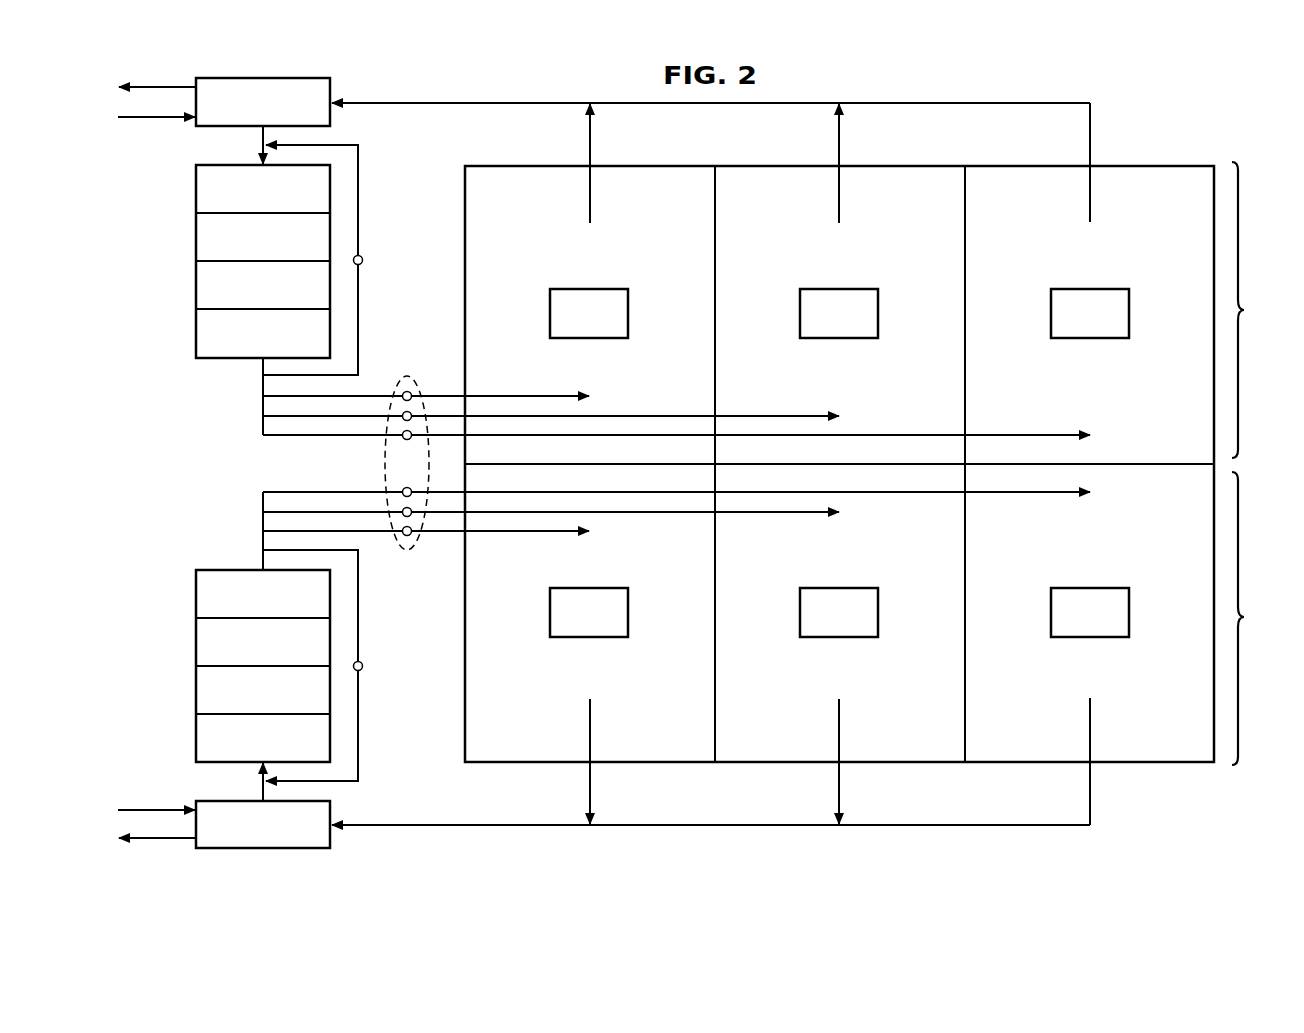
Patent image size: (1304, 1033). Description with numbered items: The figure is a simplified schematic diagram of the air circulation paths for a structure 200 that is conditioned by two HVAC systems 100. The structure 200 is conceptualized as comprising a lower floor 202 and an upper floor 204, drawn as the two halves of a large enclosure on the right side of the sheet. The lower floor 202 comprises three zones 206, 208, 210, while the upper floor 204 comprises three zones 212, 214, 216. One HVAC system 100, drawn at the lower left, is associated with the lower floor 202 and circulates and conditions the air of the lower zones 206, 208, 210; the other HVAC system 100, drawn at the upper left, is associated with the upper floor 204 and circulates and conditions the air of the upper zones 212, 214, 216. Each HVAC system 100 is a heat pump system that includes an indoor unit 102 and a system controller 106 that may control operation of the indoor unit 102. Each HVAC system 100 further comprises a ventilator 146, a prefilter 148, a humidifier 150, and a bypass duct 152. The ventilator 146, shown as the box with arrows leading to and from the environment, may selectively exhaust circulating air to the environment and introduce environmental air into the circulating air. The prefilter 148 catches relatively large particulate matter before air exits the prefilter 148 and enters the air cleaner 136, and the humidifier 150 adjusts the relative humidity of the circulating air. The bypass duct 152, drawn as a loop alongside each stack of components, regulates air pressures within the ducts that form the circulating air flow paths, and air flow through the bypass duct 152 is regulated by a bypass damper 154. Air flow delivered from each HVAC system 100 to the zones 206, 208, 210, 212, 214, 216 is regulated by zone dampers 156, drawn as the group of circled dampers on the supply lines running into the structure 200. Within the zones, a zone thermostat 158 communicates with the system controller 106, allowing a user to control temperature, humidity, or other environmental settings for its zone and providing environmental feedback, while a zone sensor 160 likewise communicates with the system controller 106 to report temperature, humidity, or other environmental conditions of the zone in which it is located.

The HVAC system 100 is at (190, 390).
The indoor unit 102 is at (198, 285).
The system controller 106 is at (590, 289).
The air cleaner 136 is at (198, 693).
The ventilator 146 is at (330, 118).
The prefilter 148 is at (198, 189).
The humidifier 150 is at (198, 333).
The bypass duct 152 is at (360, 200).
The bypass damper 154 is at (363, 260).
The zone dampers 156 is at (198, 237).
The zone thermostat 158 is at (836, 289).
The zone sensor 160 is at (1090, 289).
The structure 200 is at (1190, 166).
The lower floor 202 is at (1259, 618).
The upper floor 204 is at (1259, 310).
The zone 206 is at (550, 757).
The zone 208 is at (878, 757).
The zone 210 is at (1128, 757).
The zone 212 is at (550, 173).
The zone 214 is at (878, 173).
The zone 216 is at (1032, 173).